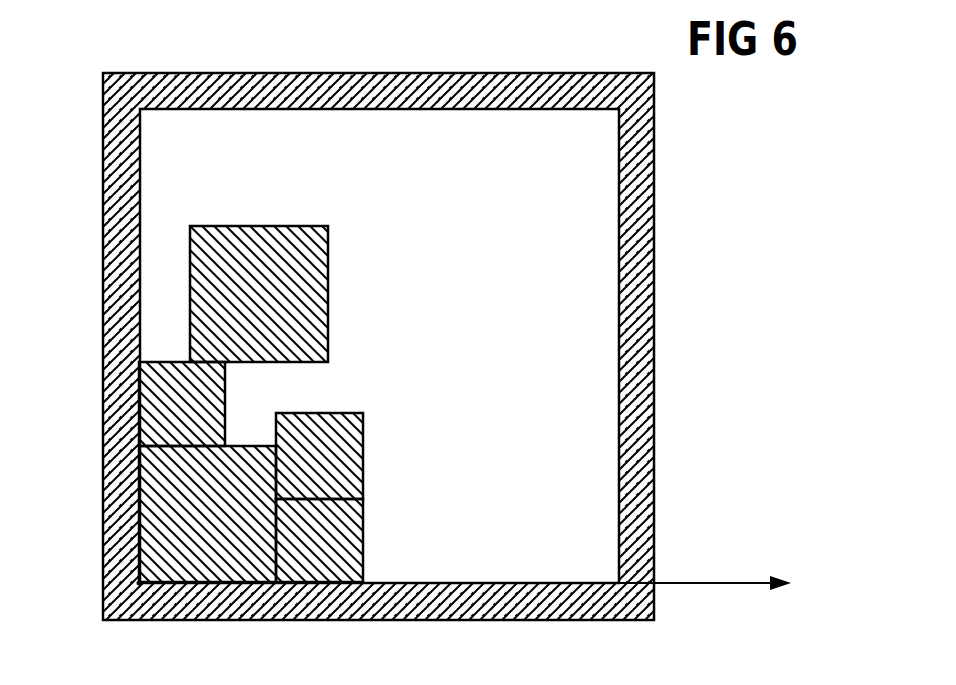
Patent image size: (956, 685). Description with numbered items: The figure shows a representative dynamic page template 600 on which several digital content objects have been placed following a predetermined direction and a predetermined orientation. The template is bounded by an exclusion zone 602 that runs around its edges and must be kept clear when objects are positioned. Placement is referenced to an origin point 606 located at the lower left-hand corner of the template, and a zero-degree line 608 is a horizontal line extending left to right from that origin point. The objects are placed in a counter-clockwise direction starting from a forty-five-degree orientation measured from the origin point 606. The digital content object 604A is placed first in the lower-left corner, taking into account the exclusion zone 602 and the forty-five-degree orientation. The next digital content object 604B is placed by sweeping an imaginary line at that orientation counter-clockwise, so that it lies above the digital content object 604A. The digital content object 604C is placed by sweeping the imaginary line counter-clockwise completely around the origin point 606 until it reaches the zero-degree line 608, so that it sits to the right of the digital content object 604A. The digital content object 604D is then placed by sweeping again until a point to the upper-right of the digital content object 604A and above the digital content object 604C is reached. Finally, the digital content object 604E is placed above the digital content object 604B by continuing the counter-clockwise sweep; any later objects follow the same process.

The dynamic page template 600 is at (655, 106).
The exclusion zone 602 is at (642, 293).
The digital content object 604A is at (234, 526).
The digital content object 604B is at (208, 412).
The digital content object 604C is at (346, 552).
The digital content object 604D is at (346, 467).
The digital content object 604E is at (286, 306).
The origin point 606 is at (138, 583).
The zero-degree line 608 is at (720, 583).